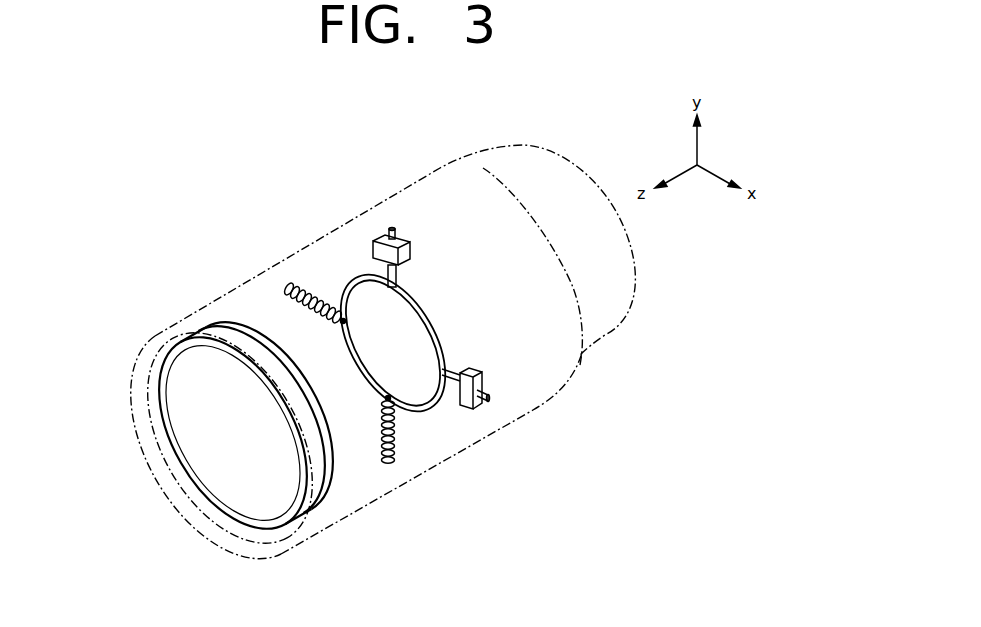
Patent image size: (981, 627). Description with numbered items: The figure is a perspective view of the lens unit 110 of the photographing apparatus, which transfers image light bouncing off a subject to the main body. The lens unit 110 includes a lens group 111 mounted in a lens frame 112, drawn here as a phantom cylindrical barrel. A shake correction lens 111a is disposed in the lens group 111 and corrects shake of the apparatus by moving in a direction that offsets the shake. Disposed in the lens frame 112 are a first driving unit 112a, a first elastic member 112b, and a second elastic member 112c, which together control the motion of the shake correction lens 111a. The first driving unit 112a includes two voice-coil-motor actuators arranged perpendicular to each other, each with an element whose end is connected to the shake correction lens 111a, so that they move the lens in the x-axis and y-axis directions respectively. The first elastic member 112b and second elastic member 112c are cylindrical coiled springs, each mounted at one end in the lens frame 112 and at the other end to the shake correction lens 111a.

The lens unit 110 is at (147, 192).
The lens group 111 is at (187, 368).
The shake correction lens 111a is at (370, 308).
The lens frame 112 is at (185, 512).
The first driving unit 112a is at (673, 430).
The first elastic member 112b is at (290, 287).
The second elastic member 112c is at (397, 460).